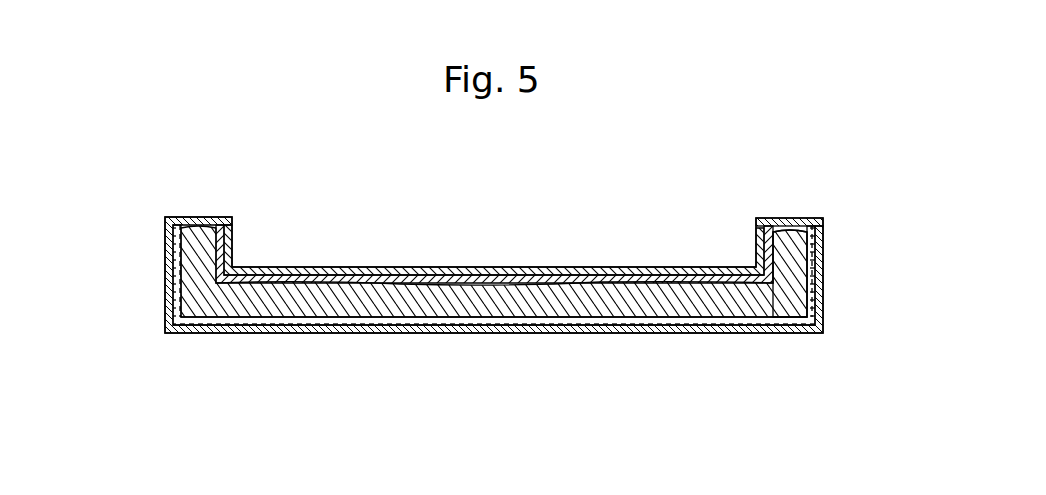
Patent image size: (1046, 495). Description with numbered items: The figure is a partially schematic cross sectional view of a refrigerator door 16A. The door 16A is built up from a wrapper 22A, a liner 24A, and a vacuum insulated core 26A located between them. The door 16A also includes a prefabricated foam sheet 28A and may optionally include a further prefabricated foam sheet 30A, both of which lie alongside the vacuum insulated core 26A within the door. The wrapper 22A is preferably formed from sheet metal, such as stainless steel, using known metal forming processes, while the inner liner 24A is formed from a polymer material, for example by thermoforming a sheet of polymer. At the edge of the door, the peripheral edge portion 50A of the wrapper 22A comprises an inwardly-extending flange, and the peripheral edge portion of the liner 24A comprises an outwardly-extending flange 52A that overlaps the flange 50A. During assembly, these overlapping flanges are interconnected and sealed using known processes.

The door 16A is at (160, 282).
The wrapper 22A is at (232, 340).
The liner 24A is at (308, 262).
The vacuum insulated core 26A is at (543, 308).
The prefabricated foam sheet 28A is at (424, 277).
The prefabricated foam sheet 30A is at (315, 323).
The peripheral edge portion of wrapper 50A is at (797, 230).
The outwardly-extending flange 52A is at (782, 222).